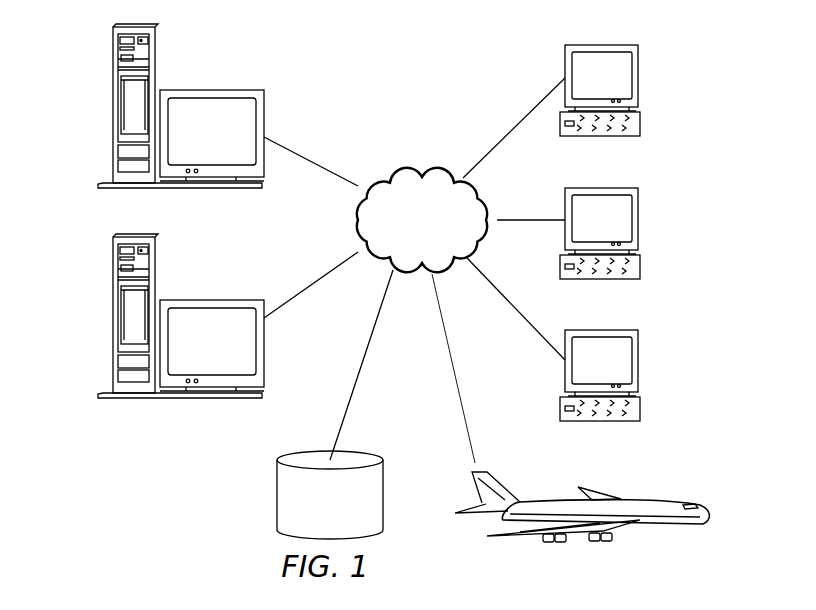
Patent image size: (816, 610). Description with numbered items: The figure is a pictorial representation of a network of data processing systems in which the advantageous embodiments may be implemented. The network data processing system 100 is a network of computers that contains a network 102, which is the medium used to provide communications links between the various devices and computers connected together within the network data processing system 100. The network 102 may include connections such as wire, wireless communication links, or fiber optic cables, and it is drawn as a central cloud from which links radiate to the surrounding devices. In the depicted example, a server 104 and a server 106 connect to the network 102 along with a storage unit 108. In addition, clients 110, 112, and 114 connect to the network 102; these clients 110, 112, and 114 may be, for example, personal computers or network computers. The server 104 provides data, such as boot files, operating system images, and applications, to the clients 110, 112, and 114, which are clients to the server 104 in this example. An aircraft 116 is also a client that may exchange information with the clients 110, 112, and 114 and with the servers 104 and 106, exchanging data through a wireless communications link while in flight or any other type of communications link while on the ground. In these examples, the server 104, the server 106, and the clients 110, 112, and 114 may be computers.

The network data processing system 100 is at (476, 54).
The network 102 is at (393, 172).
The server 104 is at (113, 107).
The server 106 is at (113, 317).
The storage unit 108 is at (277, 502).
The client 110 is at (640, 75).
The client 112 is at (640, 220).
The client 114 is at (640, 360).
The aircraft 116 is at (653, 527).